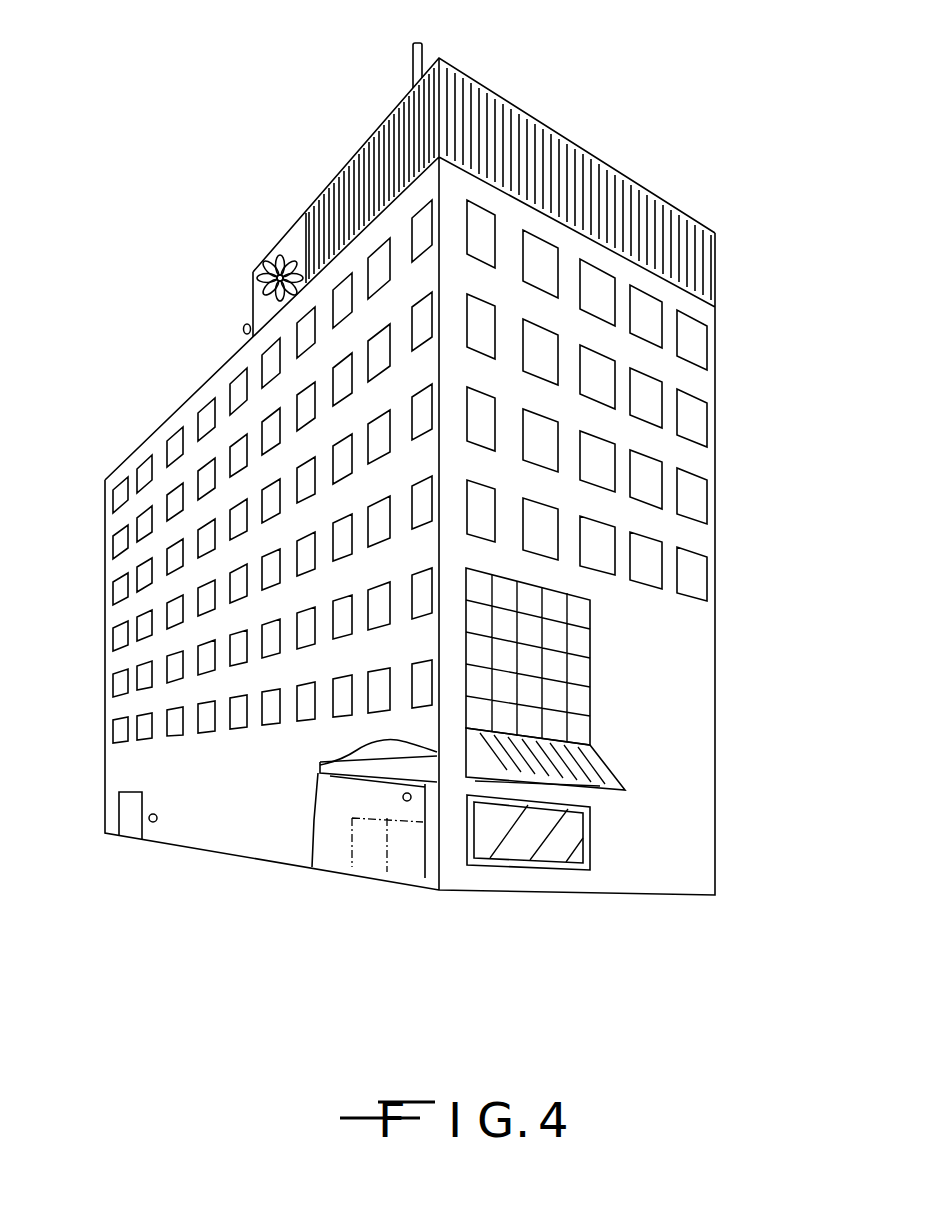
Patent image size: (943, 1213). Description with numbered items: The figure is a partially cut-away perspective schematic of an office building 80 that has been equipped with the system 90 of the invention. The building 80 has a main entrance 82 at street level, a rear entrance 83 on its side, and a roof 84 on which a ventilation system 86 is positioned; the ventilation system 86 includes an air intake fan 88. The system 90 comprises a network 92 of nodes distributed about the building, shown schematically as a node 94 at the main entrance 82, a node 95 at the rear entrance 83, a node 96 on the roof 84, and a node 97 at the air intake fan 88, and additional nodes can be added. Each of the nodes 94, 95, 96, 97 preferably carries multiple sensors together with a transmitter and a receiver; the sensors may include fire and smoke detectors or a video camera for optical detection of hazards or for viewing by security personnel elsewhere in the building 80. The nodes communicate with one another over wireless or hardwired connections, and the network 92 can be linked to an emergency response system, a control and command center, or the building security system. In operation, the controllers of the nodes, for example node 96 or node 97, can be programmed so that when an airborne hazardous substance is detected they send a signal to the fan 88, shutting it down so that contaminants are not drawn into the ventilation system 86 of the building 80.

The office building 80 is at (725, 377).
The main entrance 82 is at (345, 870).
The rear entrance 83 is at (105, 833).
The roof 84 is at (190, 397).
The ventilation system 86 is at (352, 151).
The air intake fan 88 is at (253, 271).
The system 90 is at (797, 490).
The network of nodes 92 is at (795, 253).
The node at the main entrance 94 is at (407, 801).
The node at the rear entrance 95 is at (153, 822).
The node on the roof 96 is at (422, 38).
The node at the air intake fan 97 is at (241, 326).